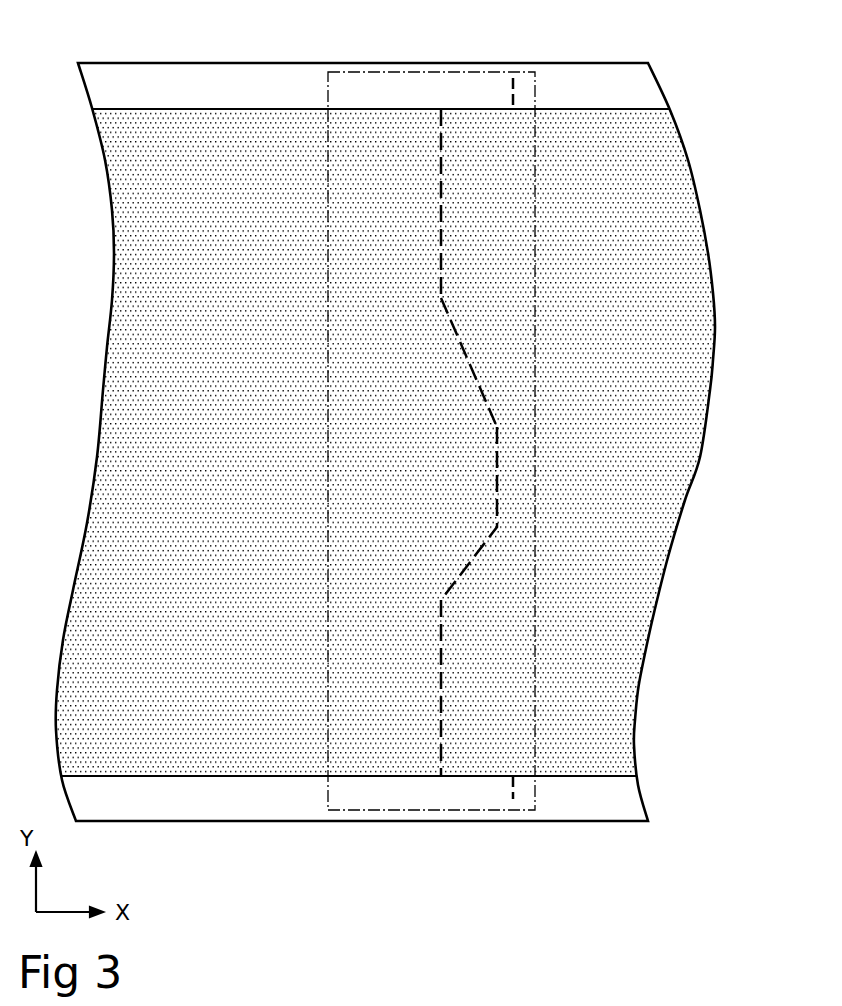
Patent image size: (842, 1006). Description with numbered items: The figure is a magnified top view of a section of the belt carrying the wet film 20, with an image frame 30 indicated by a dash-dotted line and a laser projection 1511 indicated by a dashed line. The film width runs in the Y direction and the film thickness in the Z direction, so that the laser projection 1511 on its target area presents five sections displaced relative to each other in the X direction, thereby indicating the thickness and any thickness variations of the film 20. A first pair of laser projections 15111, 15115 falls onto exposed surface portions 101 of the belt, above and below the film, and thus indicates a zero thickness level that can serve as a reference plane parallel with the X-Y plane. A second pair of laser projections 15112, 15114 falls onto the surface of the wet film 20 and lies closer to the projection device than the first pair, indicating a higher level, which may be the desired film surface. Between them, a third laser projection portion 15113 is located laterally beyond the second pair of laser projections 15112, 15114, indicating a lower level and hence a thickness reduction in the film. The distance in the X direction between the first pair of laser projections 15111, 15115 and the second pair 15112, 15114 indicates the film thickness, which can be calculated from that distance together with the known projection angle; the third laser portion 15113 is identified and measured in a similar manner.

The wet film 20 is at (507, 725).
The image frame 30 is at (327, 177).
The exposed surface portion of the belt 101 is at (433, 797).
The laser projection 1511 is at (512, 404).
The first laser projection 15111 is at (513, 83).
The second laser projection 15112 is at (441, 203).
The third laser projection portion 15113 is at (500, 528).
The second laser projection 15114 is at (438, 767).
The first laser projection 15115 is at (512, 795).